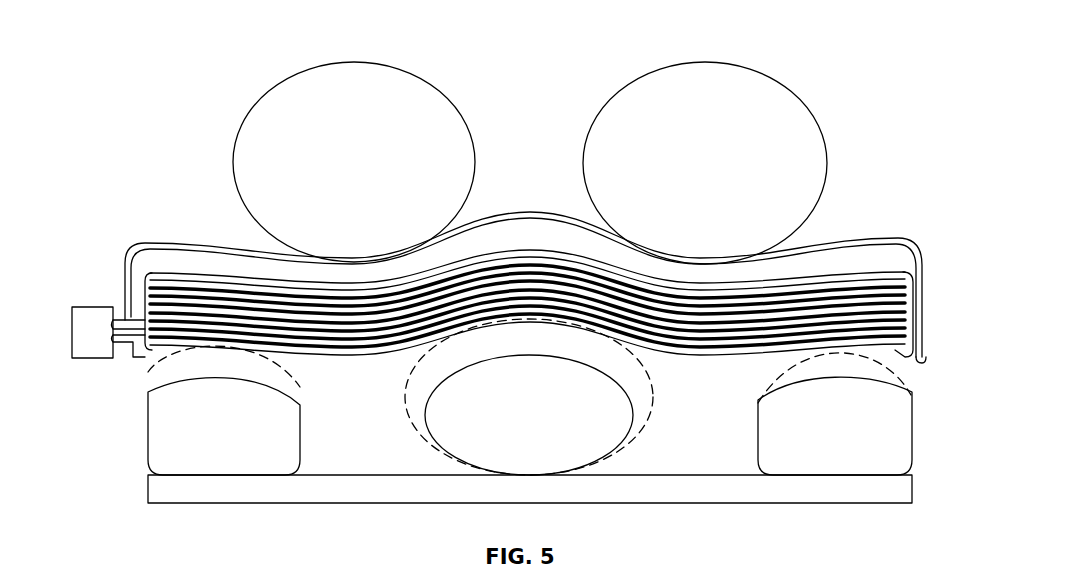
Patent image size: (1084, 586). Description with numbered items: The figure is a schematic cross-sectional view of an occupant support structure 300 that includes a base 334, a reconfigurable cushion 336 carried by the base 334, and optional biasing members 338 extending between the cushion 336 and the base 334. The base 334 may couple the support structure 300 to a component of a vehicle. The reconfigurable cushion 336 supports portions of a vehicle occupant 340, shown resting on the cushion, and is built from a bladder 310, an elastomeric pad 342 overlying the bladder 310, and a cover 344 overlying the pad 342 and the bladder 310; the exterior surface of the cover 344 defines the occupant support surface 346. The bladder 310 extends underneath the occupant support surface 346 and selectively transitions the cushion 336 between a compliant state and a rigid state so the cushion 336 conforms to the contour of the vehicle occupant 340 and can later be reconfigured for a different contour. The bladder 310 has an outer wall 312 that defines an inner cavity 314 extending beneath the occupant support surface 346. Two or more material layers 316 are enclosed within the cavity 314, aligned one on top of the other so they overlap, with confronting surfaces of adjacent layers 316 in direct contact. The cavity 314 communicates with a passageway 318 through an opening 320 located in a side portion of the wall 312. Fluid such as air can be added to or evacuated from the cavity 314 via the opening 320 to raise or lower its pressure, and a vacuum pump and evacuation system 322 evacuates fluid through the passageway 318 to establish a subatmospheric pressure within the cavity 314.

The occupant support structure 300 is at (163, 222).
The bladder 310 is at (702, 358).
The outer wall 312 is at (346, 358).
The inner cavity 314 is at (145, 385).
The material layers 316 is at (917, 357).
The passageway 318 is at (128, 355).
The opening 320 is at (124, 305).
The vacuum pump and evacuation system 322 is at (92, 307).
The base 334 is at (148, 490).
The reconfigurable cushion 336 is at (931, 306).
The biasing members 338 is at (912, 432).
The vehicle occupant 340 is at (706, 60).
The elastomeric pad 342 is at (901, 243).
The cover 344 is at (843, 237).
The occupant support surface 346 is at (530, 212).